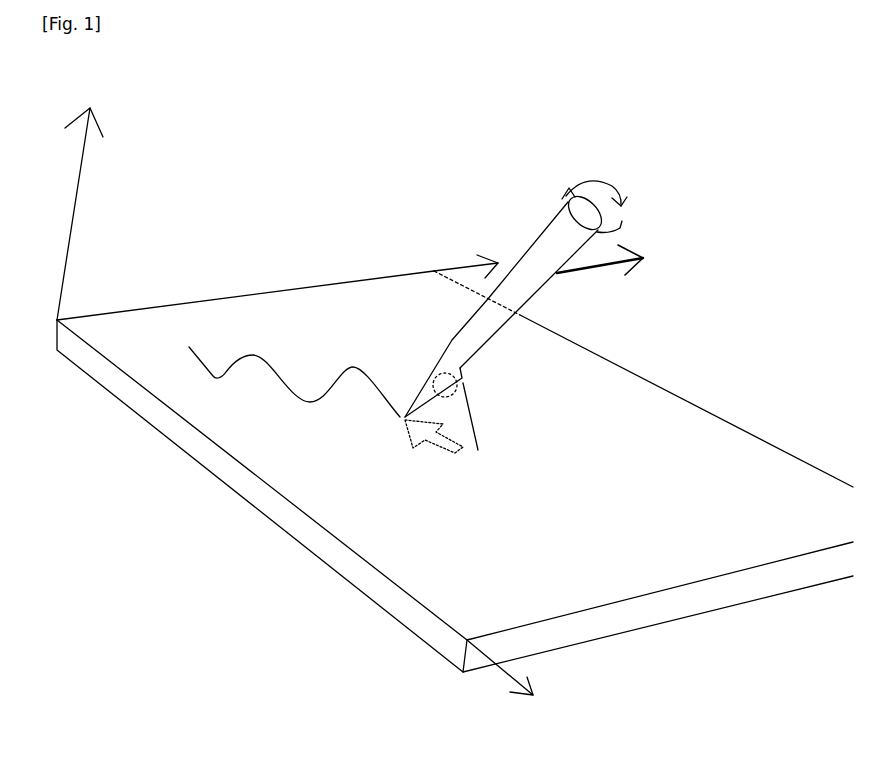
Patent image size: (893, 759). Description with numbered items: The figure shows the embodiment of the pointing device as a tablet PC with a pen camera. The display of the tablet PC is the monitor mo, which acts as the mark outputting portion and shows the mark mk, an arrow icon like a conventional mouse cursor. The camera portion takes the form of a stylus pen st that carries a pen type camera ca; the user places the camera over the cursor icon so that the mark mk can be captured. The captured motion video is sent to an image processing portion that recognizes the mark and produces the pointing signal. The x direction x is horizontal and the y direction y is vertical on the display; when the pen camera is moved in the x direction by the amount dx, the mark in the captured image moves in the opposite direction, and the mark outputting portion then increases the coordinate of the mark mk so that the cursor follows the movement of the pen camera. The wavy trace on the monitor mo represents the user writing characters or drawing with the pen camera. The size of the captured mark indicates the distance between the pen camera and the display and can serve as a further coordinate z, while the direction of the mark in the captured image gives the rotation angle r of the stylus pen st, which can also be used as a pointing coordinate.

The z coordinate z is at (84, 200).
The x direction x is at (464, 256).
The y direction y is at (502, 685).
The monitor mo is at (200, 304).
The stylus pen st is at (553, 212).
The rotation of stylus pen r is at (595, 199).
The x direction movement dx is at (614, 257).
The camera ca is at (460, 363).
The mark mk is at (435, 443).